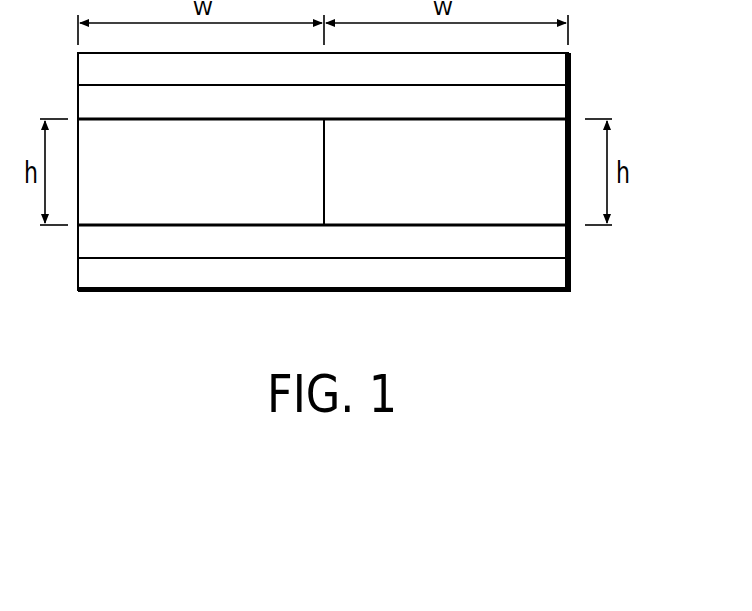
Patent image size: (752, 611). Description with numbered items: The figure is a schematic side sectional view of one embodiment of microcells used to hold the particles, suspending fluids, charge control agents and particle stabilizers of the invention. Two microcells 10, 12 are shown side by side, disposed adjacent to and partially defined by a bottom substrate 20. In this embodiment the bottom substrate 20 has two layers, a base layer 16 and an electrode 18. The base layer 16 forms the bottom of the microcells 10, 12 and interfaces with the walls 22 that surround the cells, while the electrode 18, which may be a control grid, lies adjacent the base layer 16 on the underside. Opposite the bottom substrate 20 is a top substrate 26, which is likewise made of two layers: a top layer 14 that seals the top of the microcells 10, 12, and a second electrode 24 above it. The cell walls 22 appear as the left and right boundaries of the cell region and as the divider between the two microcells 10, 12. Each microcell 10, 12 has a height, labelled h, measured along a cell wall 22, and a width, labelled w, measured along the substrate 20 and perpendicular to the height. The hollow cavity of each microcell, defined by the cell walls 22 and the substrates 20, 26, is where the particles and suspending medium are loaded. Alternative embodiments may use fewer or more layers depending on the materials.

The microcell 10 is at (218, 189).
The microcell 12 is at (457, 189).
The top layer 14 is at (571, 97).
The base layer 16 is at (571, 240).
The electrode 18 is at (571, 278).
The bottom substrate 20 is at (383, 263).
The cell walls 22 is at (80, 150).
The second electrode 24 is at (571, 60).
The top substrate 26 is at (383, 78).